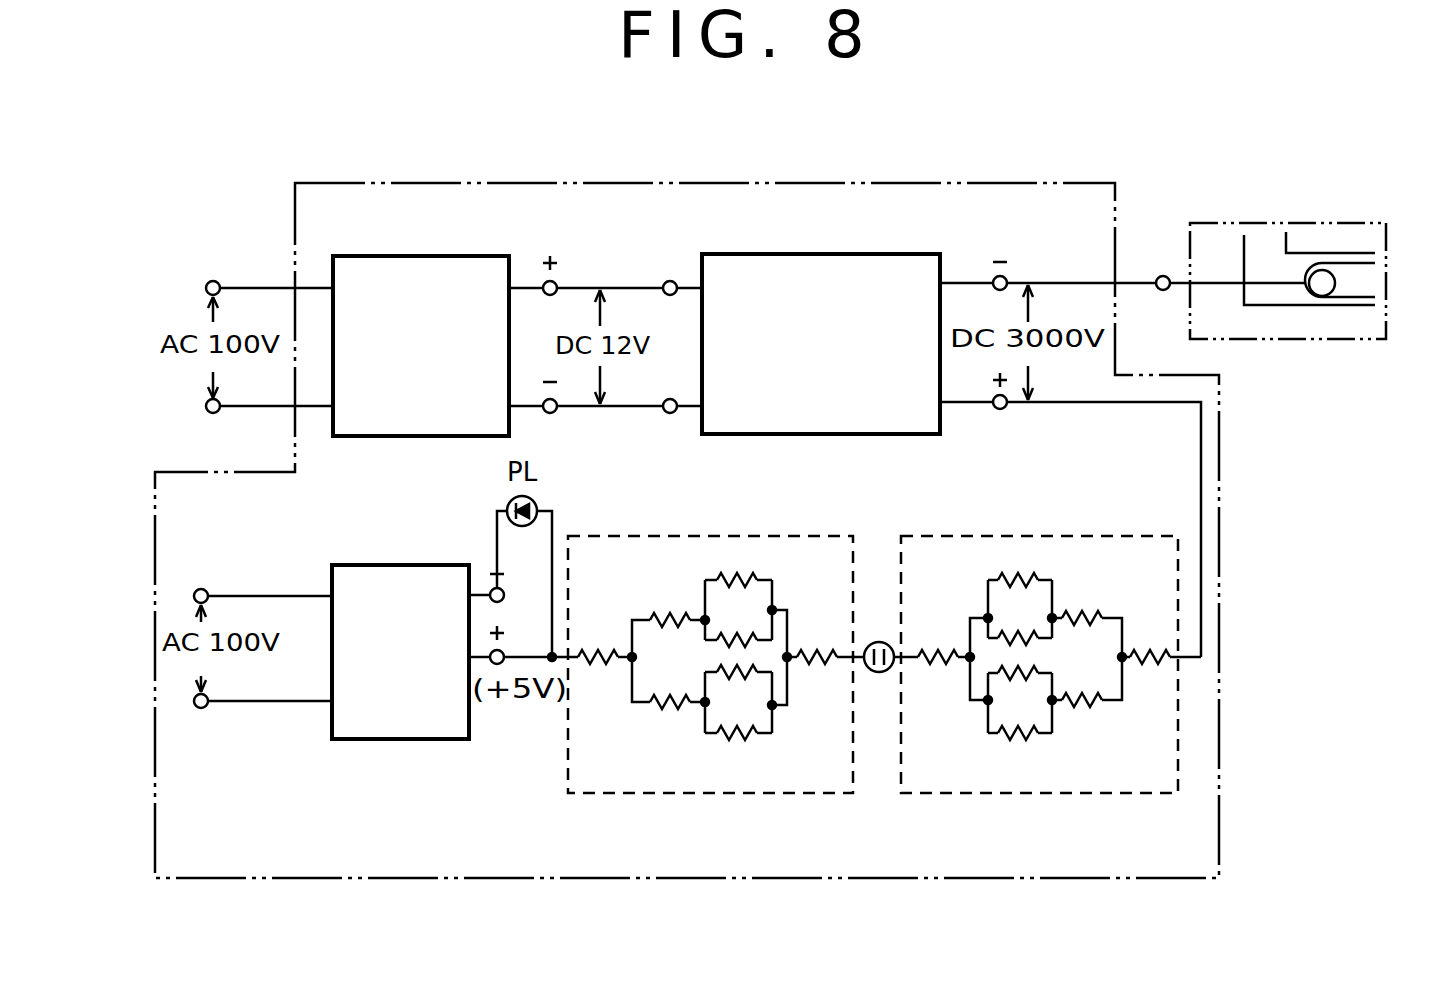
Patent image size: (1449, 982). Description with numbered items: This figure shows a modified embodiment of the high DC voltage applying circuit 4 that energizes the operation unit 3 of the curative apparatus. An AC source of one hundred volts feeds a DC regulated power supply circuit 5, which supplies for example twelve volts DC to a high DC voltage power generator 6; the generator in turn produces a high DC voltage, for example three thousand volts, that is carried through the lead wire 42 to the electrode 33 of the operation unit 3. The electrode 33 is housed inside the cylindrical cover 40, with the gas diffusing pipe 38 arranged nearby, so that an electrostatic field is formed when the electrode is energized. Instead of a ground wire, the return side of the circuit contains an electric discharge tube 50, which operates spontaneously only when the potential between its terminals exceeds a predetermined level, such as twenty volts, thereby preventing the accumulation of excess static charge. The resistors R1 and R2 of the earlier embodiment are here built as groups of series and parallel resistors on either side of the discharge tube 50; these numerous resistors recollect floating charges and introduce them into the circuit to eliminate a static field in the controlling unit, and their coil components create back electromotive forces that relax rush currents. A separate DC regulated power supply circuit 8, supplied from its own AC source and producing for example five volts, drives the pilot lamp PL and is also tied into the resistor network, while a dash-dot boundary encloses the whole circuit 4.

The operation unit 3 is at (1310, 278).
The high DC voltage applying circuit 4 is at (879, 183).
The DC regulated power supply circuit 5 is at (386, 256).
The high DC voltage power generator 6 is at (779, 254).
The DC regulated power supply circuit 8 is at (413, 740).
The electrode 33 is at (1320, 292).
The gas diffusing pipe 38 is at (1258, 306).
The cylindrical cover 40 is at (1350, 300).
The lead wire 42 is at (1138, 283).
The electric discharge tube 50 is at (880, 672).
The resistor R1 is at (1058, 532).
The resistor R2 is at (733, 533).